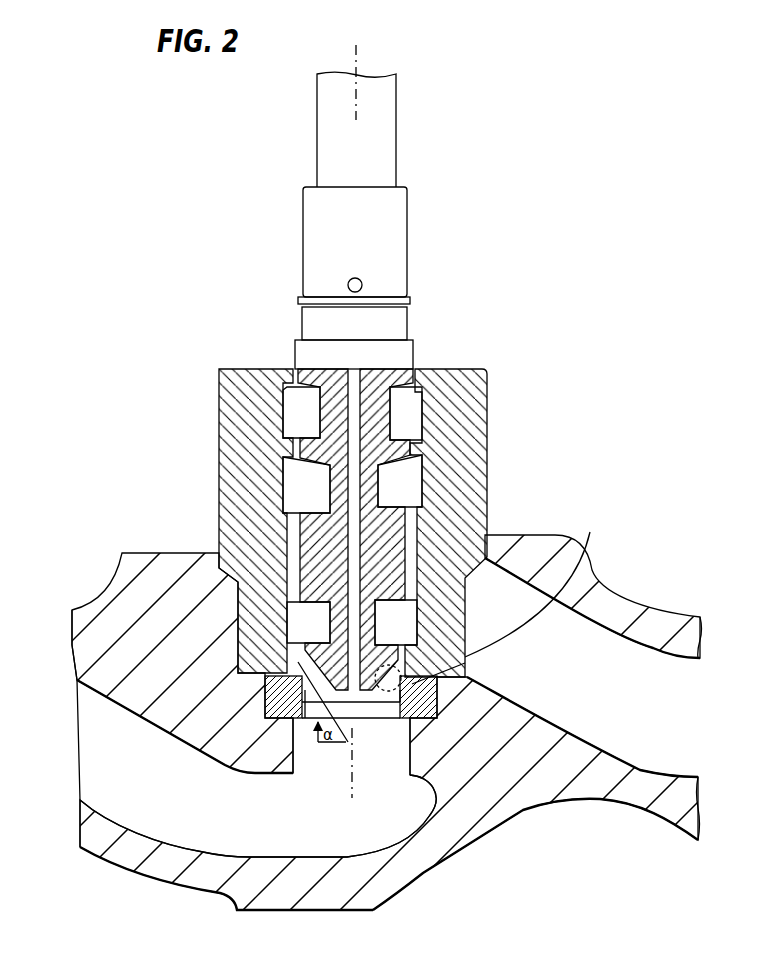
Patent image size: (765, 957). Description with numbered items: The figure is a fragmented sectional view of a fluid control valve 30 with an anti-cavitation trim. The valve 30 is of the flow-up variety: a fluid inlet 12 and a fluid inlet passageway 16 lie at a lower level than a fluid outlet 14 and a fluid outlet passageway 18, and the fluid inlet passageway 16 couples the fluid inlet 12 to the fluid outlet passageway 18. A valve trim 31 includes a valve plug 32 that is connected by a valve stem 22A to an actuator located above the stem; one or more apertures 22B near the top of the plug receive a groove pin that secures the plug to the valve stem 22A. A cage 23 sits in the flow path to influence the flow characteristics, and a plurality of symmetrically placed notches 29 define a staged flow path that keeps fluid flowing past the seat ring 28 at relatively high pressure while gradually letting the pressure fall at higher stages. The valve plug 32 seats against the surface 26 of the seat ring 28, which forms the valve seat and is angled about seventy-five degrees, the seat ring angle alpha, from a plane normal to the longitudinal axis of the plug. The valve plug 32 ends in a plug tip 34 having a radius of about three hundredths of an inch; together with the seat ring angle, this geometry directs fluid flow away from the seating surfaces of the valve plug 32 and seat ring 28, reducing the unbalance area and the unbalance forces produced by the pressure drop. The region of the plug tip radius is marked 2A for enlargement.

The fluid inlet 12 is at (78, 768).
The fluid outlet 14 is at (700, 728).
The fluid inlet passageway 16 is at (113, 745).
The fluid outlet passageway 18 is at (555, 640).
The valve stem 22A is at (390, 140).
The aperture 22B is at (362, 283).
The cage 23 is at (232, 412).
The surface of the seat ring 26 is at (305, 663).
The seat ring 28 is at (265, 688).
The notches 29 is at (307, 620).
The valve 30 is at (522, 832).
The valve trim 31 is at (419, 366).
The valve plug 32 is at (378, 688).
The plug tip 34 is at (557, 642).
The detail view region 2A is at (487, 533).